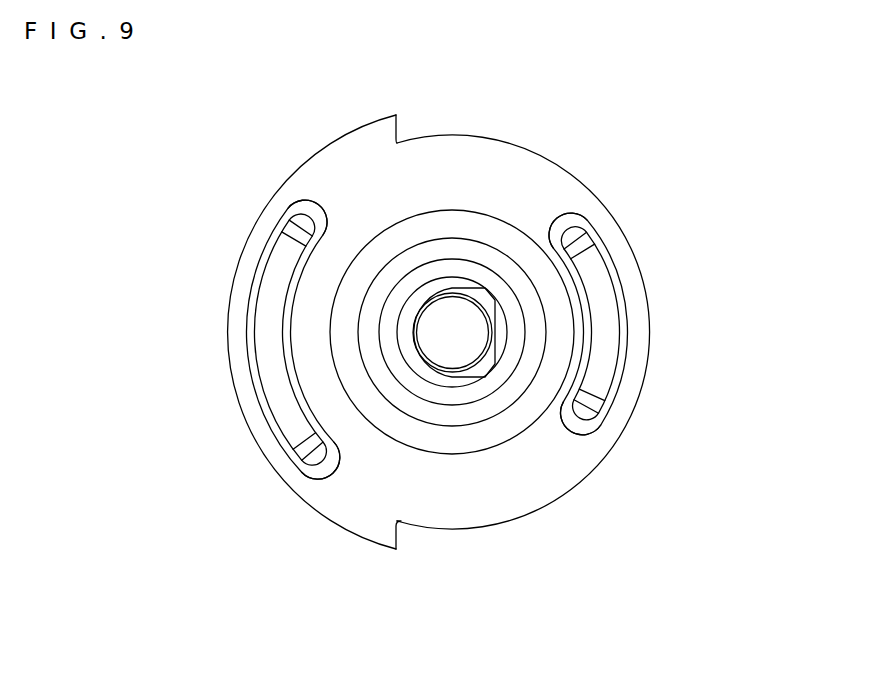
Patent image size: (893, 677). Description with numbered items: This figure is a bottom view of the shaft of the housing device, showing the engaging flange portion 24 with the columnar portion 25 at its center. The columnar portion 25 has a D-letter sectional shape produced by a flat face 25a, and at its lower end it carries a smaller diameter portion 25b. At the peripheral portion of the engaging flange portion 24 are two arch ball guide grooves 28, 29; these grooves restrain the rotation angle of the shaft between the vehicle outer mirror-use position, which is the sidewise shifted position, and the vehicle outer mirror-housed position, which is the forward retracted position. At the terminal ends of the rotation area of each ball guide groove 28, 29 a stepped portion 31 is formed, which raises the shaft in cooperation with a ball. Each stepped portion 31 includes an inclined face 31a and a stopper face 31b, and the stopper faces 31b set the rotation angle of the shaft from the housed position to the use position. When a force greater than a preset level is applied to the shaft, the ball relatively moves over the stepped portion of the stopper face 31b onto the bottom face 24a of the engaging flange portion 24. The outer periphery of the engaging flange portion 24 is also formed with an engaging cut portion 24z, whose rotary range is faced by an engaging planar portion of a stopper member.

The engaging flange portion 24 is at (232, 388).
The bottom face 24a is at (514, 178).
The engaging cut portion 24z is at (398, 127).
The columnar portion 25 is at (457, 404).
The flat face 25a is at (498, 333).
The smaller diameter portion 25b is at (452, 289).
The arch ball guide groove 28 is at (602, 303).
The arch ball guide groove 29 is at (268, 303).
The stepped portion 31 is at (185, 147).
The inclined face 31a is at (292, 231).
The stopper face 31b is at (306, 218).